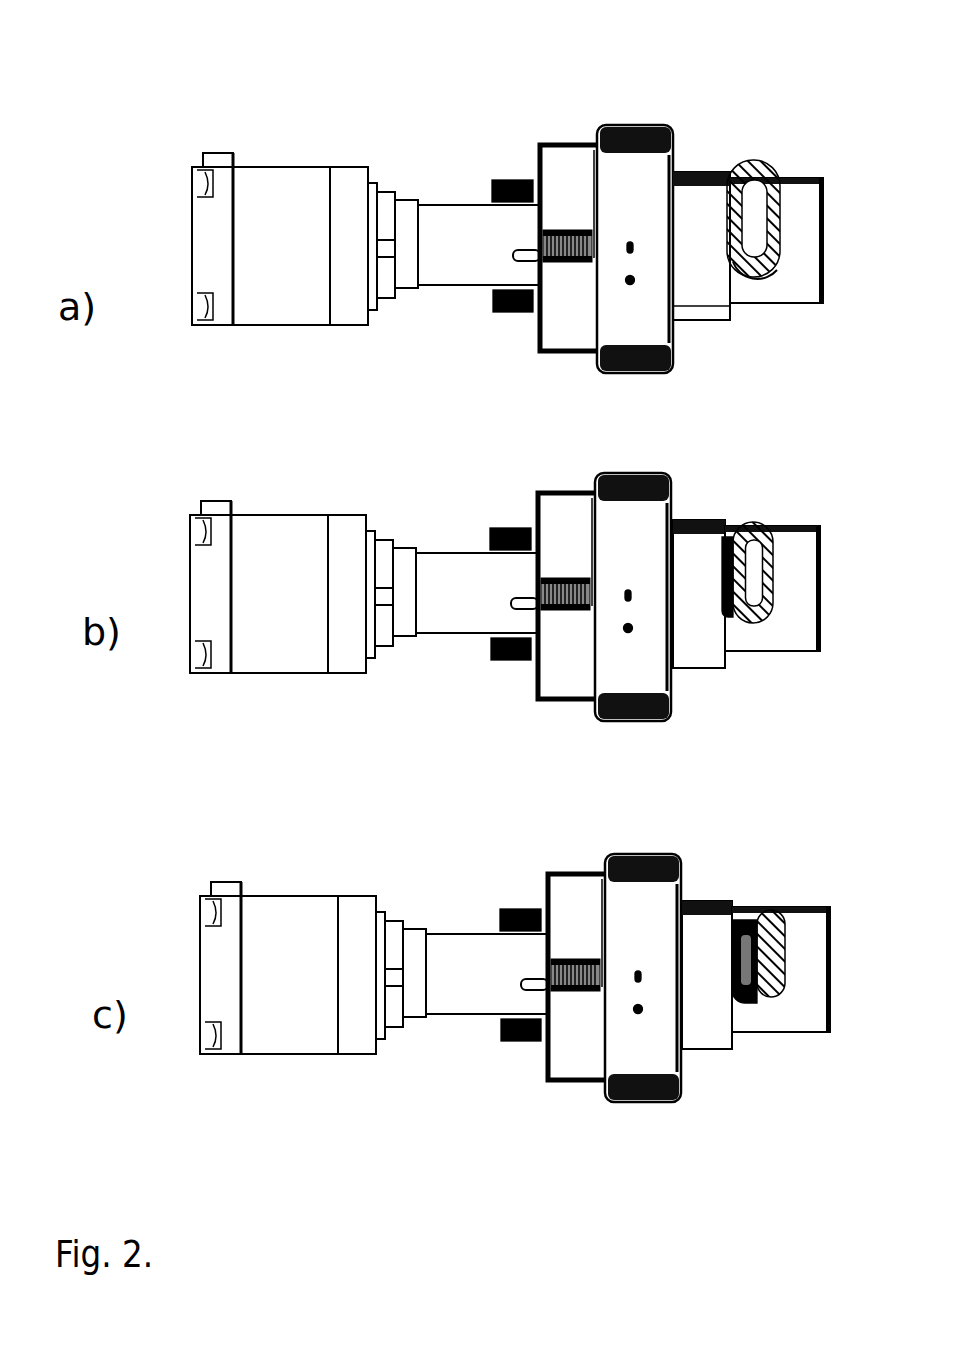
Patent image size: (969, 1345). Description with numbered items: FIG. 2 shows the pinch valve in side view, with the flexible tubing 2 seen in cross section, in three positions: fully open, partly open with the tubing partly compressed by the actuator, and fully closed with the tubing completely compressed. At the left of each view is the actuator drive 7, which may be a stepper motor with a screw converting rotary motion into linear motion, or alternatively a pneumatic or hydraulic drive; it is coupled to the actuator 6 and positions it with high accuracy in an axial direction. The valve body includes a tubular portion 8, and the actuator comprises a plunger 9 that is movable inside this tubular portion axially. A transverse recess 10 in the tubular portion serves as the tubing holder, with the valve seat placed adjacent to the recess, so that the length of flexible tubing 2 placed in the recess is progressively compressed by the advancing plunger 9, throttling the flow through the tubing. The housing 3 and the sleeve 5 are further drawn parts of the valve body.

The flexible tubing 2 is at (758, 175).
The housing drum 3 is at (637, 137).
The cylindrical sleeve 5 is at (785, 222).
The actuator 6 is at (437, 233).
The actuator drive 7 is at (263, 210).
The tubular portion of the valve body 8 is at (697, 173).
The plunger 9 is at (728, 538).
The transverse recess 10 is at (760, 278).